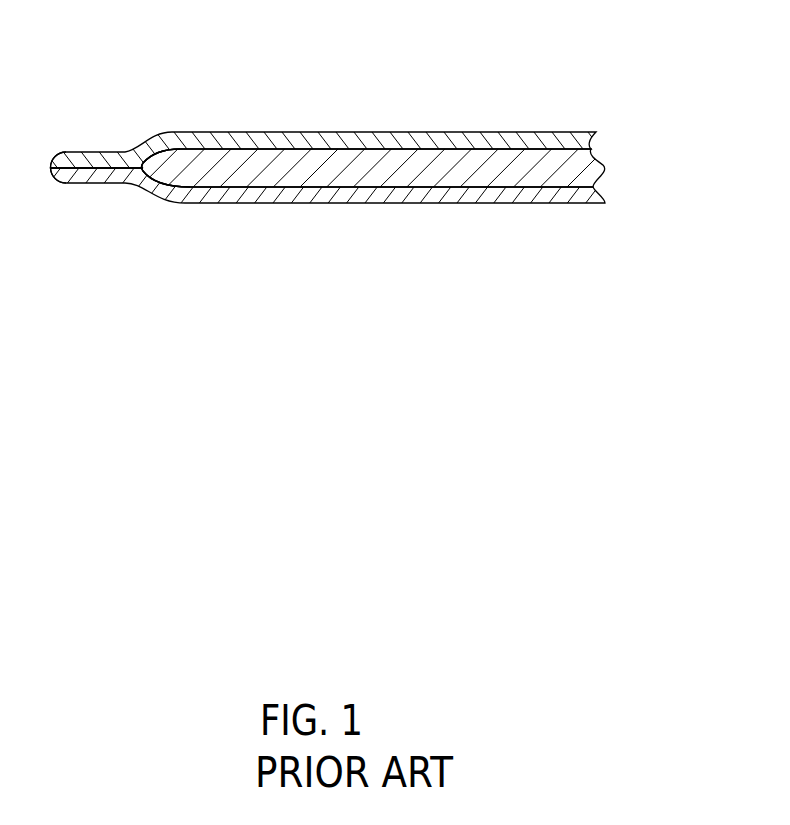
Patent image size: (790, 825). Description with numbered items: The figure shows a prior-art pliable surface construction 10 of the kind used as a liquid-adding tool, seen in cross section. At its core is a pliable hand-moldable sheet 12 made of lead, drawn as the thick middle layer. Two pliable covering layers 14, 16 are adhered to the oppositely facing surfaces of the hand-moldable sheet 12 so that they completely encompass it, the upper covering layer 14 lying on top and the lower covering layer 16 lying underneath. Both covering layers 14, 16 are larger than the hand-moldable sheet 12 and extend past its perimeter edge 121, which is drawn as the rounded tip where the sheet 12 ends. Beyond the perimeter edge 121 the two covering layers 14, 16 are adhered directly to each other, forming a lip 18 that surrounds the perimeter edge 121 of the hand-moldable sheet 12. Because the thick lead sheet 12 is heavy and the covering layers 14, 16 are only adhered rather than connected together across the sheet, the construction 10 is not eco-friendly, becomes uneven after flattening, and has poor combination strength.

The pliable surface construction 10 is at (346, 172).
The pliable hand-moldable sheet 12 is at (575, 173).
The perimeter edge 121 is at (152, 151).
The pliable covering layer 14 is at (345, 140).
The pliable covering layer 16 is at (365, 192).
The lip 18 is at (89, 184).